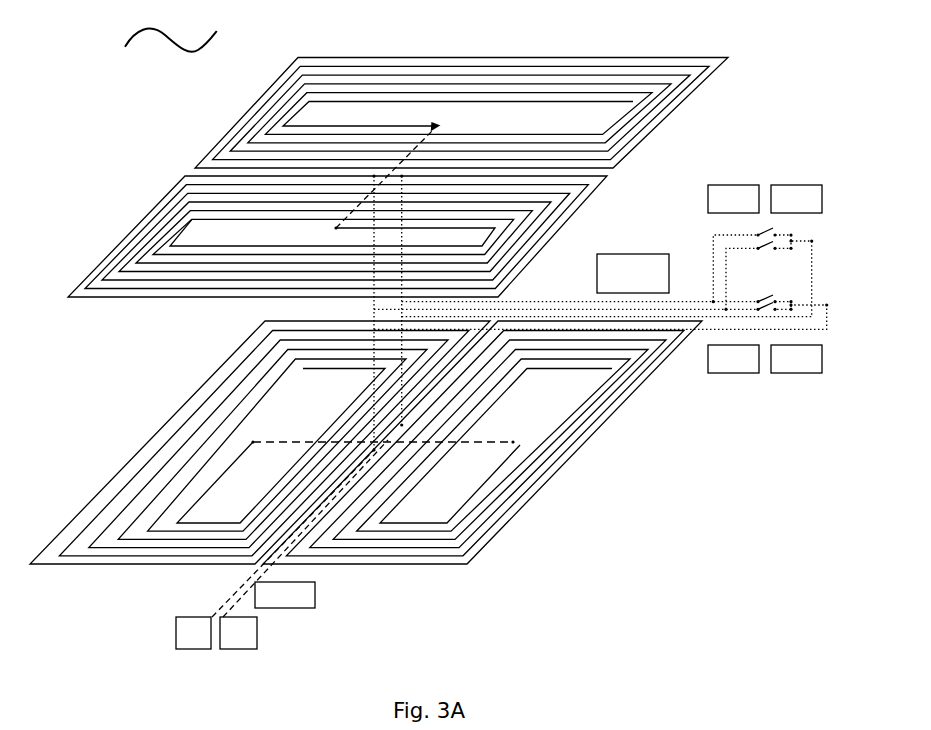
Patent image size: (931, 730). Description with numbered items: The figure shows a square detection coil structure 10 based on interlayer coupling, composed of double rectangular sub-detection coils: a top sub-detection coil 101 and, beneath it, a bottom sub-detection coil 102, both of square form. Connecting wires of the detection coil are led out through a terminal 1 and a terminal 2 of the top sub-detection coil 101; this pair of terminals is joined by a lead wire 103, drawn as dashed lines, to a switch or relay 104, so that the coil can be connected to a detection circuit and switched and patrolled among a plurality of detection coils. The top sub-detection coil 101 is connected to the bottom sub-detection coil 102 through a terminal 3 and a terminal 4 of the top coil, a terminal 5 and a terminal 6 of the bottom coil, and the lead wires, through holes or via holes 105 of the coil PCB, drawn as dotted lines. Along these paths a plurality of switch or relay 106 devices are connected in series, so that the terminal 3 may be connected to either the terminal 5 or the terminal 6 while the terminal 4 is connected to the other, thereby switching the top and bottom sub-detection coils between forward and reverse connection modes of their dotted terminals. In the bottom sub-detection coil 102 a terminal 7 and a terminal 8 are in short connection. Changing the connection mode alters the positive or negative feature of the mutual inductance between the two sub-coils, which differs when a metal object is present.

The detection coil structure based on interlayer coupling 10 is at (171, 32).
The top sub-detection coil 101 is at (557, 475).
The bottom sub-detection coil 102 is at (103, 254).
The lead wire or through hole or via hole 103 is at (300, 528).
The switch or relay 104 is at (216, 633).
The lead wire or through hole or via hole of coil circuit board for connecting top a 105 is at (633, 273).
The switch or relay for switching connection mode of top and bottom sub-detection co 106 is at (600, 313).
The terminal 1 is at (382, 436).
The terminal 2 is at (512, 436).
The terminal 3 is at (605, 379).
The terminal 4 is at (616, 335).
The terminal 5 is at (586, 245).
The terminal 6 is at (597, 237).
The terminal 7 is at (379, 187).
The terminal 8 is at (441, 125).